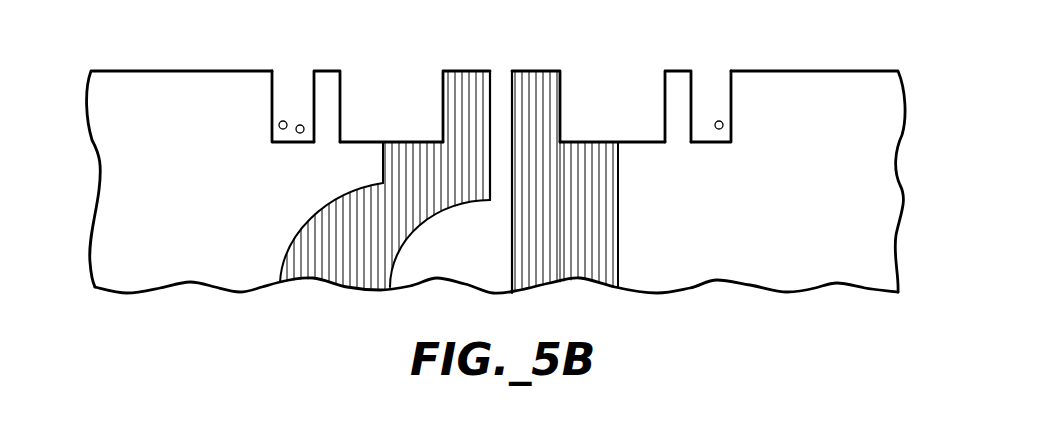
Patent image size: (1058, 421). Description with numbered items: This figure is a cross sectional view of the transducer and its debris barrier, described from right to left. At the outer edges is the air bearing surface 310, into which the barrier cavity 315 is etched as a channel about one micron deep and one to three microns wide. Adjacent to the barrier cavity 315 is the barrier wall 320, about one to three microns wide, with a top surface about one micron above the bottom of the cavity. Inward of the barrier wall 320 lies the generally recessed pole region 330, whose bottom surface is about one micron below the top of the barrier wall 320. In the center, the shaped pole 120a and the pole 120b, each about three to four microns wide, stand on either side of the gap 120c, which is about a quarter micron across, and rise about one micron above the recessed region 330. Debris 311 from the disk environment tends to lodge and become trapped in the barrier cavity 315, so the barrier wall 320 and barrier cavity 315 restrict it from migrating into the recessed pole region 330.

The air bearing surface 310 is at (180, 71).
The debris 311 is at (284, 118).
The barrier cavity 315 is at (300, 88).
The barrier wall 320 is at (323, 70).
The recessed pole region 330 is at (358, 142).
The shaped pole 120a is at (482, 70).
The pole 120b is at (532, 70).
The gap 120c is at (501, 70).